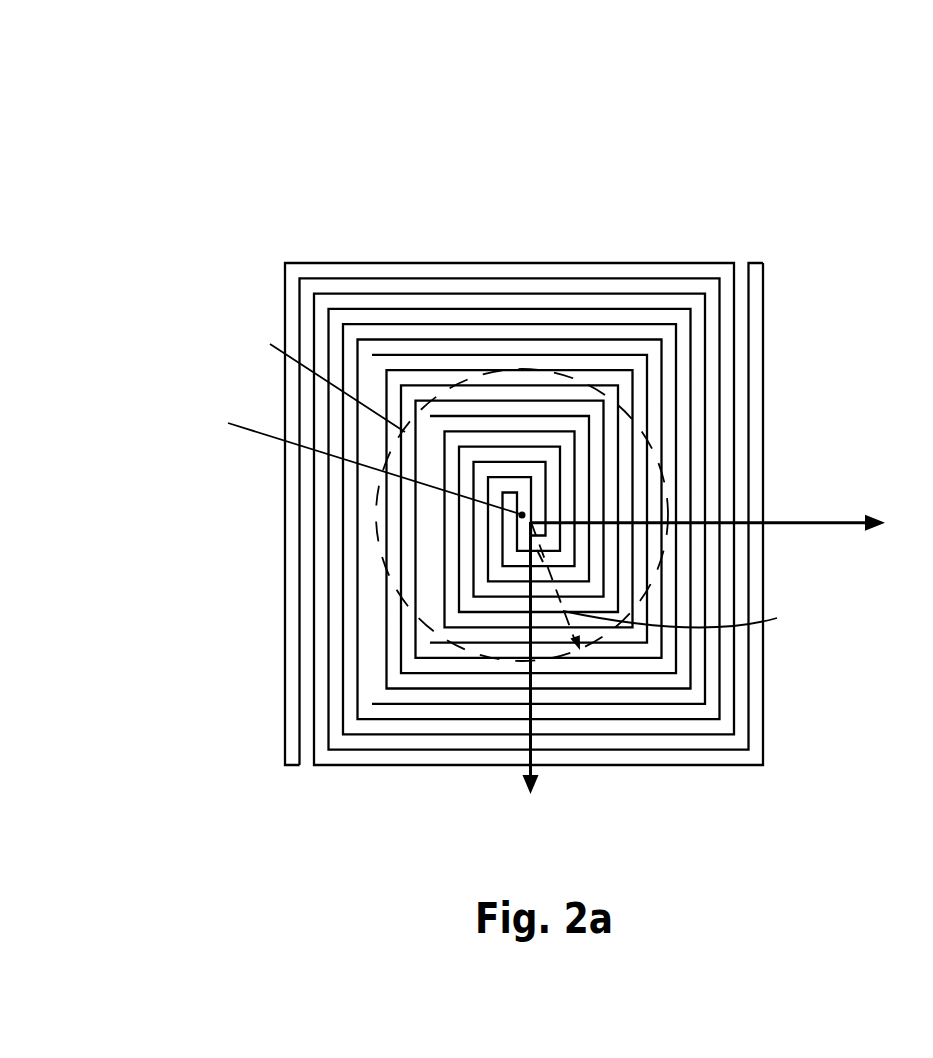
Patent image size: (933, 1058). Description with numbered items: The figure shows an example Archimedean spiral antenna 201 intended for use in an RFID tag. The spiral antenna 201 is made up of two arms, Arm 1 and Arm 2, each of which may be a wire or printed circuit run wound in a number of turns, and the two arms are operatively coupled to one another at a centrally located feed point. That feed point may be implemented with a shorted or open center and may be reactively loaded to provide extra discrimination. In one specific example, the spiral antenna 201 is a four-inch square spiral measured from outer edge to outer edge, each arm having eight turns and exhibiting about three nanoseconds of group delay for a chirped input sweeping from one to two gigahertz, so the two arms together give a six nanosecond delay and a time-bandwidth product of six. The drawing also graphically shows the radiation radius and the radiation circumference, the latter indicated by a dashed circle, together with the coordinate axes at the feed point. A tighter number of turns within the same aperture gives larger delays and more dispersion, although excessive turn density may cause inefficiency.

The Archimedean spiral antenna 201 is at (383, 159).
The Arm 1 is at (284, 738).
The Arm 2 is at (762, 310).